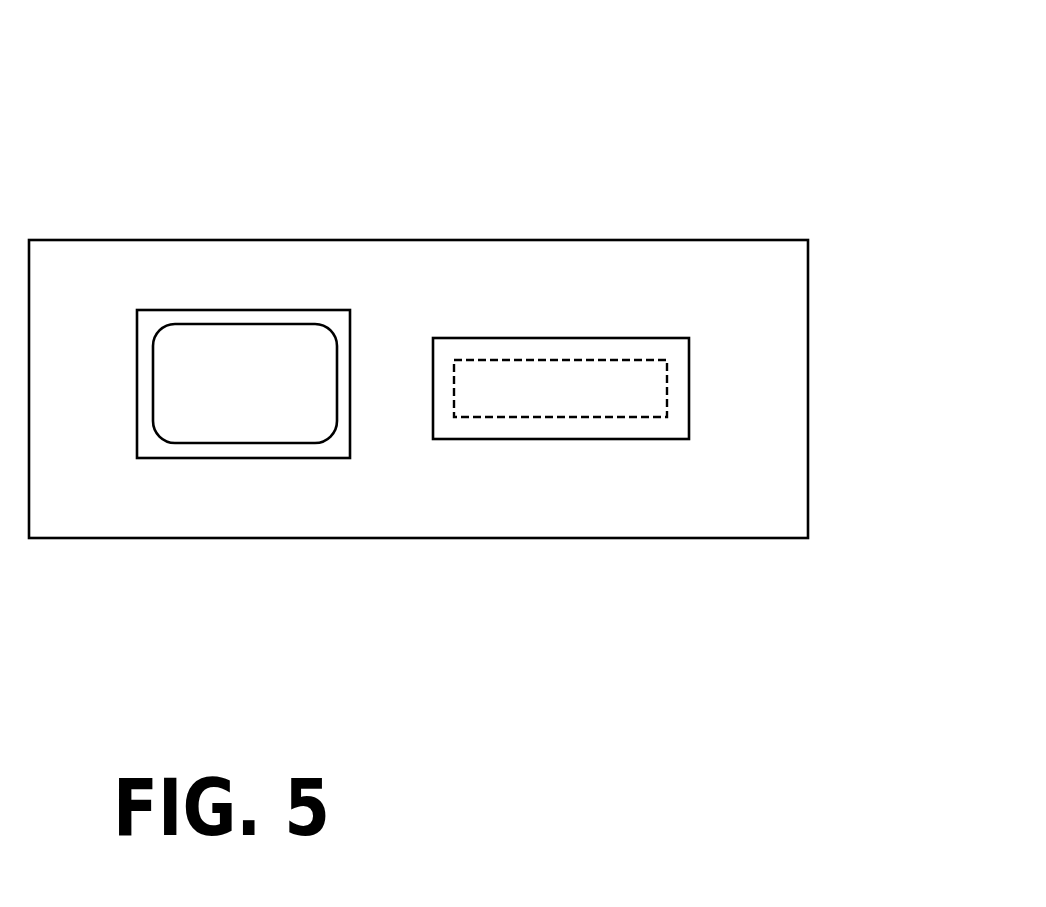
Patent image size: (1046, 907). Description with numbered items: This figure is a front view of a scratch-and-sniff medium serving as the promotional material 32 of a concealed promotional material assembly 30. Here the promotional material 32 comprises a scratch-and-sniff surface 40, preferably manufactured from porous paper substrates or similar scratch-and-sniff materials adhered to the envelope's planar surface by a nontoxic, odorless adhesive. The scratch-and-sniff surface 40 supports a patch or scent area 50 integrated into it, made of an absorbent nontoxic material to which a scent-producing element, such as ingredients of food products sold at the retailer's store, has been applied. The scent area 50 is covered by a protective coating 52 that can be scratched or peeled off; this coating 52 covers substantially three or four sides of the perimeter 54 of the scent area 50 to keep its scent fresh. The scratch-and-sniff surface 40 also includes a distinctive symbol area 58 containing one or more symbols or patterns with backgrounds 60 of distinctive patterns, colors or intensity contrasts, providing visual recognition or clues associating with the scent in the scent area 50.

The promotional material member 32 is at (183, 145).
The concealed promotional material assembly 30 is at (277, 334).
The scratch-and-sniff surface 40 is at (495, 258).
The distinctive symbol area 58 is at (328, 430).
The background 60 is at (200, 450).
The protective coating 52 is at (591, 350).
The perimeter 54 is at (618, 417).
The scent area 50 is at (675, 397).